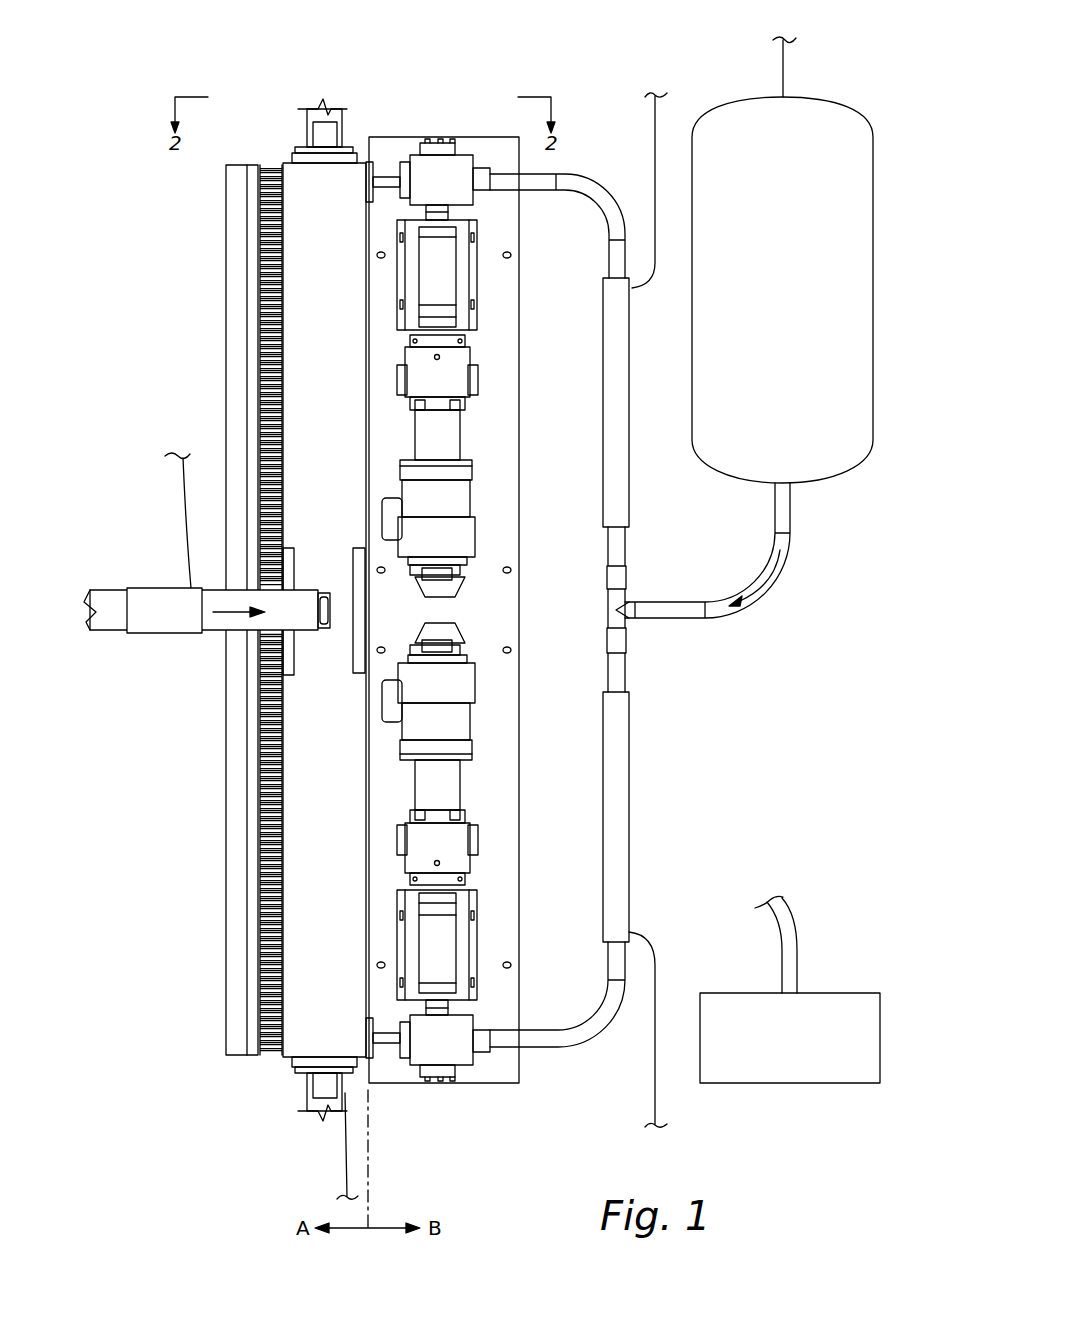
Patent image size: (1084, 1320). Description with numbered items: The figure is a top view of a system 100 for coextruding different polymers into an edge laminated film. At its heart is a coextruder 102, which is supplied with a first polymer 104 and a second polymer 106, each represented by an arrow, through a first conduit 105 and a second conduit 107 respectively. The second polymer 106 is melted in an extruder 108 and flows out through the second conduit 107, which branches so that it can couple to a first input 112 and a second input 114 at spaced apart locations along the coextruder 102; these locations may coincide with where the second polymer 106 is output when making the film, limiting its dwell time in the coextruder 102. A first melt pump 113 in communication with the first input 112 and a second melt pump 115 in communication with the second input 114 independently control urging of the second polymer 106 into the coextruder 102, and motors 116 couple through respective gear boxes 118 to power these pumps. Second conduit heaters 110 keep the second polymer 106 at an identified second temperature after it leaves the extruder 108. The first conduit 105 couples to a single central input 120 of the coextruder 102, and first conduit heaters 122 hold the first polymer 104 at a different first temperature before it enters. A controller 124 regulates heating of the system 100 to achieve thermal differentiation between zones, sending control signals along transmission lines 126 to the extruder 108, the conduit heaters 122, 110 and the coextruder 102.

The system 100 is at (232, 53).
The coextruder 102 is at (283, 163).
The first polymer 104 is at (225, 612).
The first conduit 105 is at (110, 590).
The second polymer 106 is at (780, 572).
The second conduit 107 is at (758, 600).
The extruder 108 is at (820, 97).
The second conduit heaters 110 is at (630, 500).
The first input 112 is at (377, 1055).
The first melt pump 113 is at (453, 1065).
The second input 114 is at (377, 165).
The second melt pump 115 is at (455, 155).
The motors 116 is at (458, 500).
The gear boxes 118 is at (440, 292).
The central input 120 is at (326, 593).
The first conduit heaters 122 is at (140, 633).
The controller 124 is at (790, 1083).
The transmission lines 126 is at (781, 63).